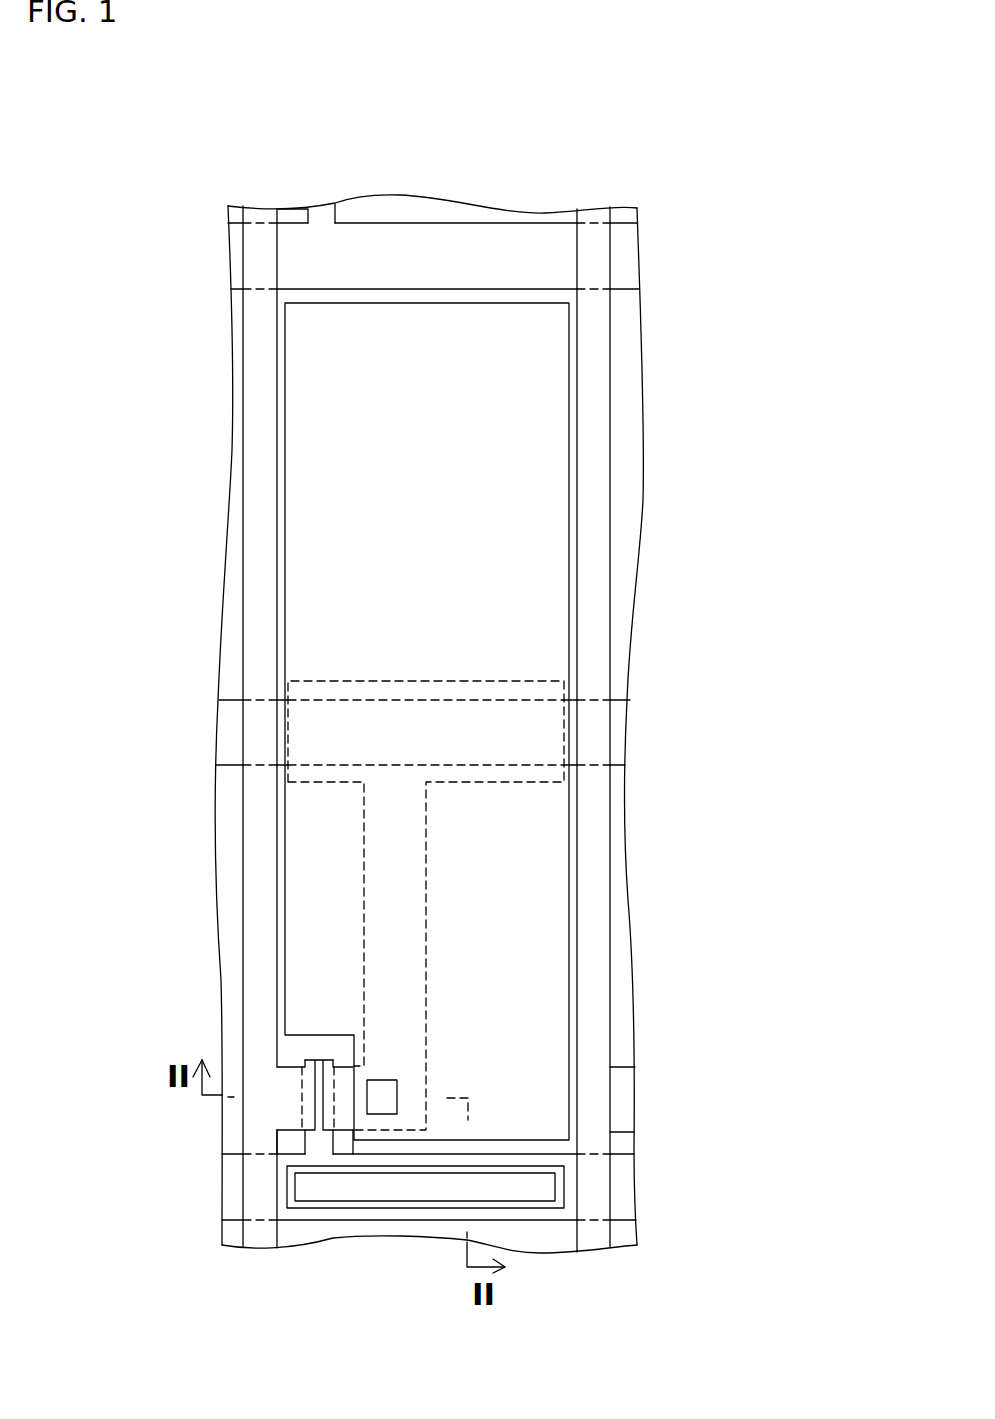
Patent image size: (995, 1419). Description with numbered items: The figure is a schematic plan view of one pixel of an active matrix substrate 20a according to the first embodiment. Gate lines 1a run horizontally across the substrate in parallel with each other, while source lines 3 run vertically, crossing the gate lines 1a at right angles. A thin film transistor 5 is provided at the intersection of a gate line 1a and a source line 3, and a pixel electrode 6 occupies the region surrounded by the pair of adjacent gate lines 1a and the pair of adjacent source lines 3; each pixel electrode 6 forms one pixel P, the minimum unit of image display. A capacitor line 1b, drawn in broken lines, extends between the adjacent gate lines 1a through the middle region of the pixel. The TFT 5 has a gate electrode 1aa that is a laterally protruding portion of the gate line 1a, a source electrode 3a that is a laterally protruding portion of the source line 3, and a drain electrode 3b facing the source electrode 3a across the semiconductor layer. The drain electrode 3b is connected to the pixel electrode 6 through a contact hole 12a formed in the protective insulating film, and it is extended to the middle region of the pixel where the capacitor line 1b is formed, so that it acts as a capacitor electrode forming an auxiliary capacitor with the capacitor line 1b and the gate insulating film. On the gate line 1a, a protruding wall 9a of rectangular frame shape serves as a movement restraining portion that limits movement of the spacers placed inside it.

The active matrix substrate 20a is at (243, 136).
The gate line 1a is at (623, 259).
The capacitor line 1b is at (617, 732).
The gate electrode 1aa is at (318, 1142).
The source line 3 is at (255, 502).
The source electrode 3a is at (292, 1117).
The drain electrode 3b is at (346, 1112).
The thin film transistor 5 is at (295, 1095).
The pixel electrode 6 is at (540, 375).
The protruding wall 9a is at (415, 1206).
The contact hole 12a is at (395, 1098).